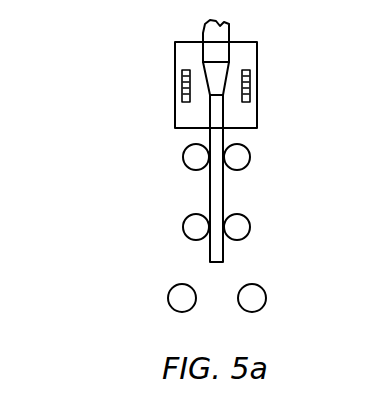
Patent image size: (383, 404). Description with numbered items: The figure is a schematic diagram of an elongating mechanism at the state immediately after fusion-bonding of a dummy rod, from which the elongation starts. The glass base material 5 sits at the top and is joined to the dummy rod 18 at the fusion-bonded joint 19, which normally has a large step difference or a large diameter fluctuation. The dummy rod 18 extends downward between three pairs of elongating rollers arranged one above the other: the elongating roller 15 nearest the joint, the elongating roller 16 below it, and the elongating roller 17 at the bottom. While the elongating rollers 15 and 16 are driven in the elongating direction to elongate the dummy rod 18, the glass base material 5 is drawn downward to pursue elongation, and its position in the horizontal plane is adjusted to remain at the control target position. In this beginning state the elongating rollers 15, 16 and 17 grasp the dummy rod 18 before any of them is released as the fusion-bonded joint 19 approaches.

The glass base material 5 is at (204, 34).
The fusion-bonded joint 19 is at (210, 96).
The dummy rod 18 is at (217, 196).
The elongating roller 15 is at (185, 170).
The elongating roller 16 is at (188, 241).
The elongating roller 17 is at (174, 300).